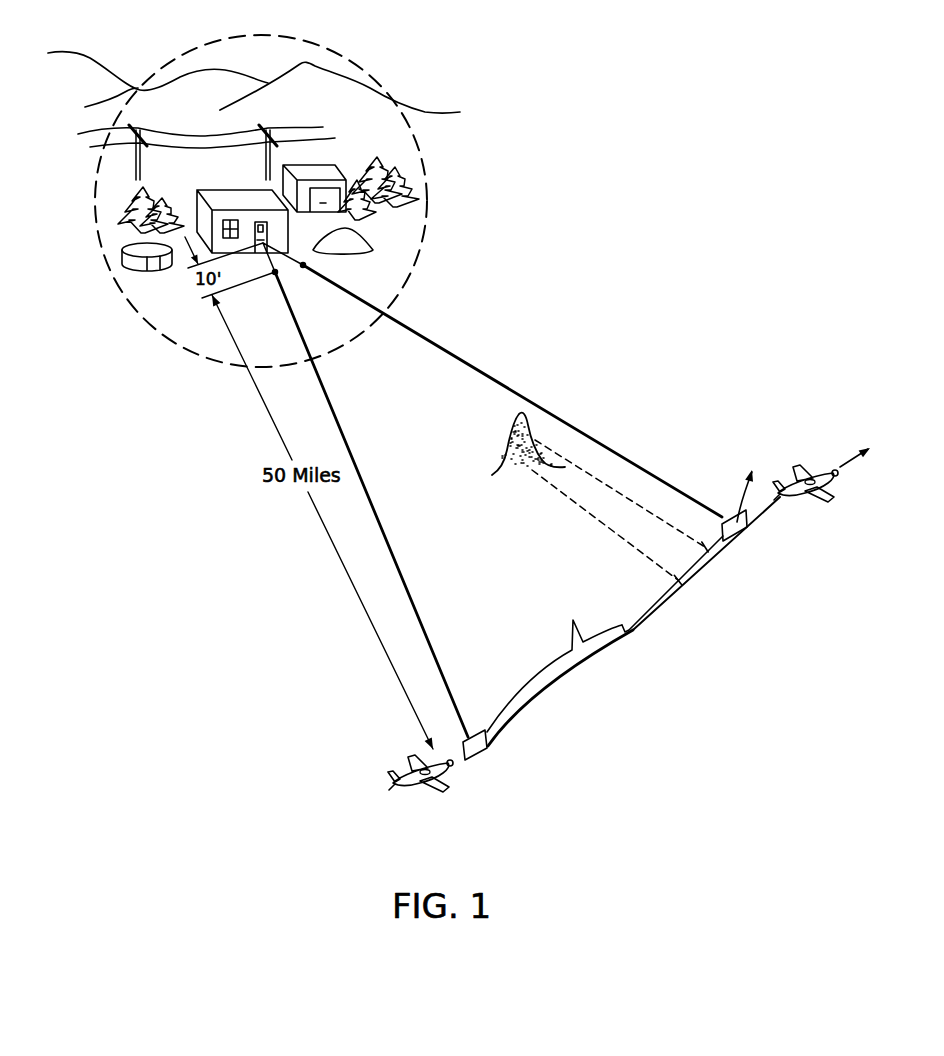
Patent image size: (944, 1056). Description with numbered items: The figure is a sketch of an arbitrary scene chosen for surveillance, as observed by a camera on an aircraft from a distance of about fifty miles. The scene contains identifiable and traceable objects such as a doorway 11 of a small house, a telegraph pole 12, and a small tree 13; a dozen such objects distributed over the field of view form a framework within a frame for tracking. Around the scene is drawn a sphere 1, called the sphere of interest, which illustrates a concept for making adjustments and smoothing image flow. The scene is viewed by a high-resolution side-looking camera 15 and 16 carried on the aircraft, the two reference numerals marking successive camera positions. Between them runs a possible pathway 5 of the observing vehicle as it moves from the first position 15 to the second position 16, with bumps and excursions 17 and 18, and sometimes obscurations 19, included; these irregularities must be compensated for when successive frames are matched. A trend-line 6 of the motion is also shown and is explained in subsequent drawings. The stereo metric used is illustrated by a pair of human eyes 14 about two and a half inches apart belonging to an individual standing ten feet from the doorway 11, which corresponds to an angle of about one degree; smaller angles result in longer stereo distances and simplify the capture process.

The sphere of interest 1 is at (415, 266).
The pathway 5 is at (843, 466).
The trend-line 6 is at (748, 489).
The doorway 11 is at (259, 225).
The telegraph pole 12 is at (268, 157).
The small tree 13 is at (403, 183).
The pair of human eyes 14 is at (292, 264).
The side-looking camera 15 is at (477, 753).
The side-looking camera 16 is at (746, 528).
The excursion 17 is at (573, 618).
The excursion 18 is at (632, 631).
The obscuration 19 is at (710, 568).